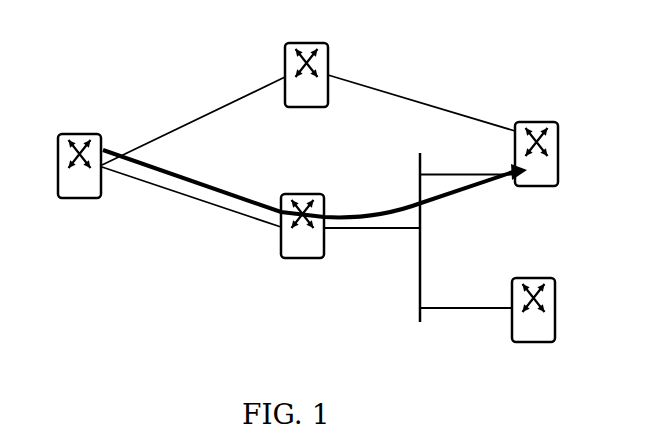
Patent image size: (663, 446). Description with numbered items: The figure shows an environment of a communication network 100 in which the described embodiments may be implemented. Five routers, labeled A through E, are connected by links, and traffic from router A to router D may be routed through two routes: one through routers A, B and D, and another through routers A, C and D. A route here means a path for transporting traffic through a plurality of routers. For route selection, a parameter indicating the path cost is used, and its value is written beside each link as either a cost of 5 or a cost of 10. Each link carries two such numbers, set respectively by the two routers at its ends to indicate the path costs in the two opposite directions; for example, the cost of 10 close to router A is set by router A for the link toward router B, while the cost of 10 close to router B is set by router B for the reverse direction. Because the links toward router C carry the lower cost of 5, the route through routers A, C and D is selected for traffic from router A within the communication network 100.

The communication network 100 is at (132, 21).
The path cost value of ten 10 is at (308, 192).
The path cost value of five 5 is at (314, 200).